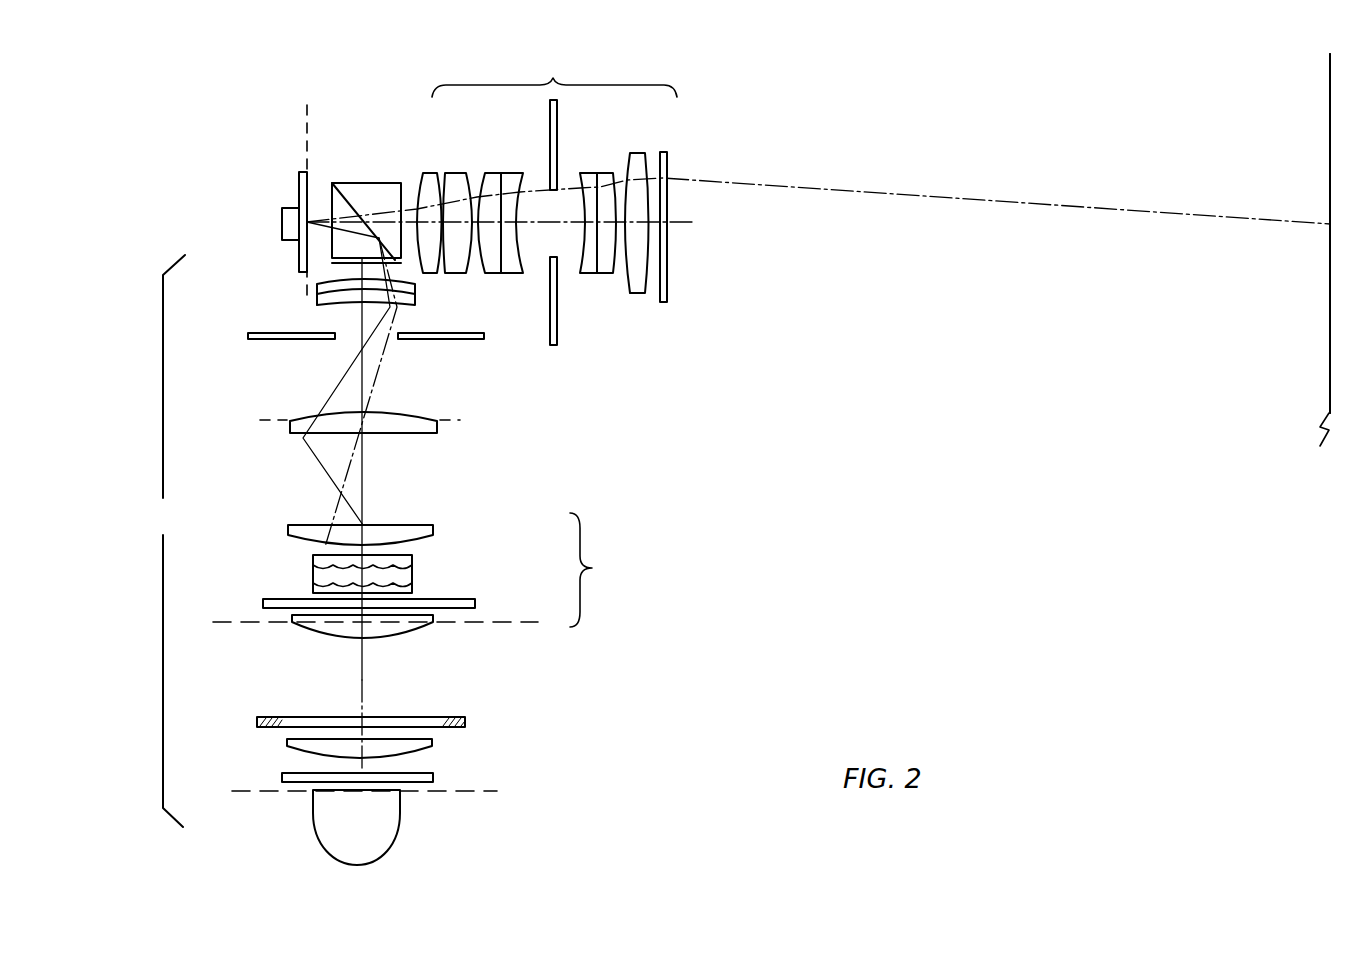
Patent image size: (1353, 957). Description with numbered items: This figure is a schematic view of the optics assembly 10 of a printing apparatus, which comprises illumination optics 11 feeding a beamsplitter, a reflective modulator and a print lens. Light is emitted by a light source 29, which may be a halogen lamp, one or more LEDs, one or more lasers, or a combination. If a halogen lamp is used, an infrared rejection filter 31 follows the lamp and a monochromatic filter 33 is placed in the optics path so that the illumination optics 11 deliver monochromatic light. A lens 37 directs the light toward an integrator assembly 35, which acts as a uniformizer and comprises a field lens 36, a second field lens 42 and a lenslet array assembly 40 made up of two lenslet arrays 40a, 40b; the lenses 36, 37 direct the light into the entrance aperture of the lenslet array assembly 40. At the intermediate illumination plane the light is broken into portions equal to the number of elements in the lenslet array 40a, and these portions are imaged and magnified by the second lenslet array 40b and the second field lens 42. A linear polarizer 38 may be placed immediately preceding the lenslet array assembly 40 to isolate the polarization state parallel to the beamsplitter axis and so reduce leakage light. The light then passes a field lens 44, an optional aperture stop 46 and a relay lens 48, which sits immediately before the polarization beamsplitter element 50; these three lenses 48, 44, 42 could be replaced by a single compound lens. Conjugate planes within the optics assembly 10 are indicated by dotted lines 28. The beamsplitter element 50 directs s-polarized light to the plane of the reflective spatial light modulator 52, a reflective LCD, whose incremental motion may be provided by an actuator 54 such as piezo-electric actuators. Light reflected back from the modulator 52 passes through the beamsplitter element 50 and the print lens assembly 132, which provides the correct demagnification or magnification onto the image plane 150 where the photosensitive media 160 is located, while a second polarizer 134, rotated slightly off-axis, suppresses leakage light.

The optics assembly 10 is at (220, 102).
The illumination optics 11 is at (167, 541).
The dotted lines 28 is at (307, 105).
The light source 29 is at (377, 815).
The infrared rejection filter 31 is at (282, 777).
The monochromatic filter 33 is at (465, 720).
The integrator assembly 35 is at (596, 567).
The field lens 36 is at (433, 630).
The lens 37 is at (417, 748).
The linear polarizer 38 is at (475, 602).
The lenslet array assembly 40 is at (425, 568).
The lenslet array 40a is at (313, 590).
The second lenslet array 40b is at (313, 558).
The second field lens 42 is at (430, 525).
The field lens 44 is at (437, 430).
The aperture stop 46 is at (248, 337).
The relay lens 48 is at (317, 300).
The polarization beamsplitter element 50 is at (382, 182).
The reflective spatial light modulator 52 is at (300, 185).
The actuator 54 is at (282, 222).
The print lens assembly 132 is at (547, 196).
The second polarizer 134 is at (667, 153).
The image plane 150 is at (1330, 356).
The photosensitive media 160 is at (1330, 120).